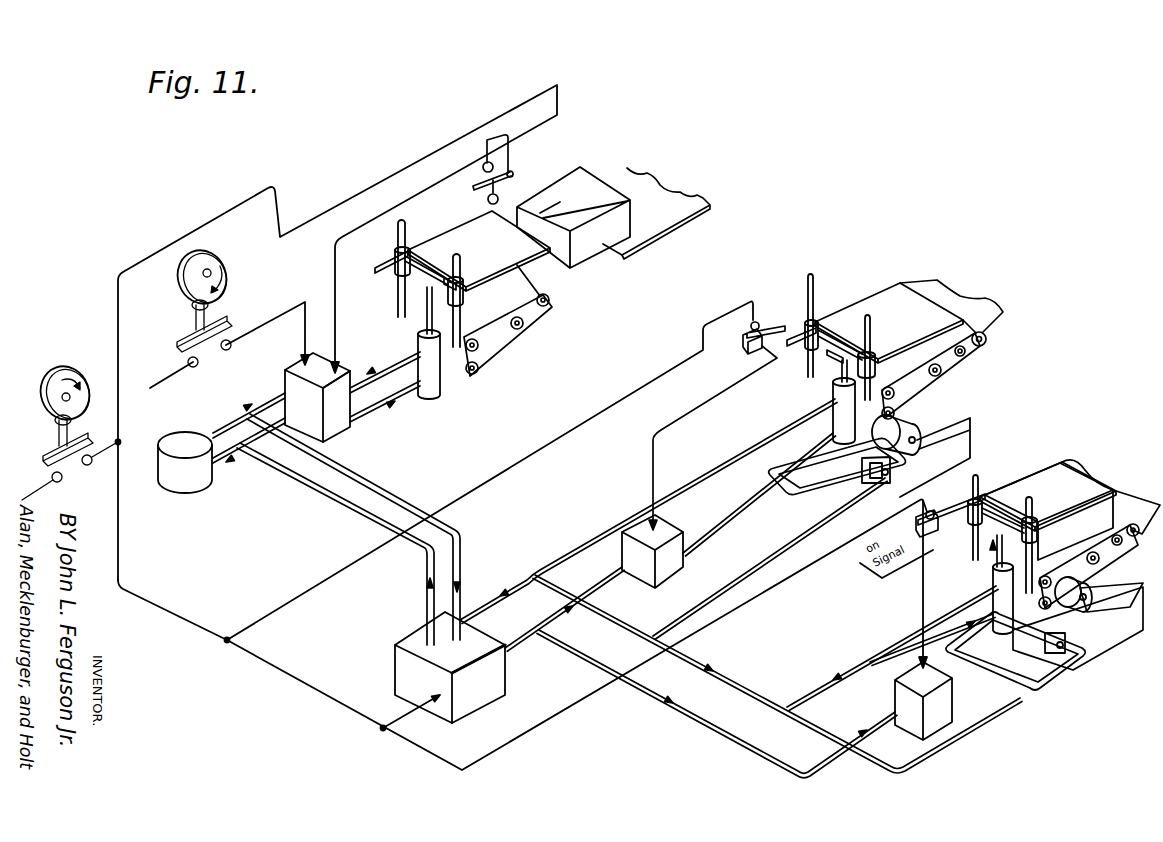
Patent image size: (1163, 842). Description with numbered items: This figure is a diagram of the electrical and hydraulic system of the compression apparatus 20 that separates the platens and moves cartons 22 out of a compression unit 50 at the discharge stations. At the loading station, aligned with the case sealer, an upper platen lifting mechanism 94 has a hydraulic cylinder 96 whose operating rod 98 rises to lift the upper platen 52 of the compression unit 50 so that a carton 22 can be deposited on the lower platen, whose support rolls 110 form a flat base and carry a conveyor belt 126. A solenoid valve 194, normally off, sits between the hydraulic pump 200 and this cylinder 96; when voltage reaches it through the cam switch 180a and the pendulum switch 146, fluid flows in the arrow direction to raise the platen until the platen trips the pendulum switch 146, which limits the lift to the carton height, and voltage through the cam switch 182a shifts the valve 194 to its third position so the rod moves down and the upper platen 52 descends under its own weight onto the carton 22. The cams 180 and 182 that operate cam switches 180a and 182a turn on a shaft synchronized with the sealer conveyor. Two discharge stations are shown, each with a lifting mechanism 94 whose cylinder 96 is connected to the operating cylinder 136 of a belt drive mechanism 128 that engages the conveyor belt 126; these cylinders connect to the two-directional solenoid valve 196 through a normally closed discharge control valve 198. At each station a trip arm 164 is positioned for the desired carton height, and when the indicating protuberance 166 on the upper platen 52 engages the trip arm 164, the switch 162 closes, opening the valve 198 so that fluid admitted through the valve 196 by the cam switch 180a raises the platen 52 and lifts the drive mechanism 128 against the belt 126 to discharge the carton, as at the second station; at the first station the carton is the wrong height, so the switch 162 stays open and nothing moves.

The compression apparatus 20 is at (697, 190).
The carton 22 is at (592, 179).
The compression unit 50 is at (527, 304).
The upper platen 52 is at (535, 260).
The upper platen lifting mechanism 94 is at (445, 376).
The hydraulic cylinder 96 is at (432, 398).
The operating rod 98 is at (410, 323).
The support rolls 110 is at (39, 486).
The conveyor belt 126 is at (498, 341).
The belt drive mechanism 128 is at (935, 413).
The operating cylinder 136 is at (893, 450).
The pendulum switch 146 is at (519, 176).
The switch 162 is at (750, 322).
The trip arm 164 is at (772, 330).
The indicating protuberance 166 is at (386, 262).
The cam 180 is at (68, 368).
The cam switch 180a is at (52, 441).
The cam 182 is at (224, 292).
The cam switch 182a is at (205, 350).
The solenoid valve 194 is at (342, 432).
The solenoid valve 196 is at (483, 688).
The discharge control valve 198 is at (674, 578).
The hydraulic pump 200 is at (196, 484).